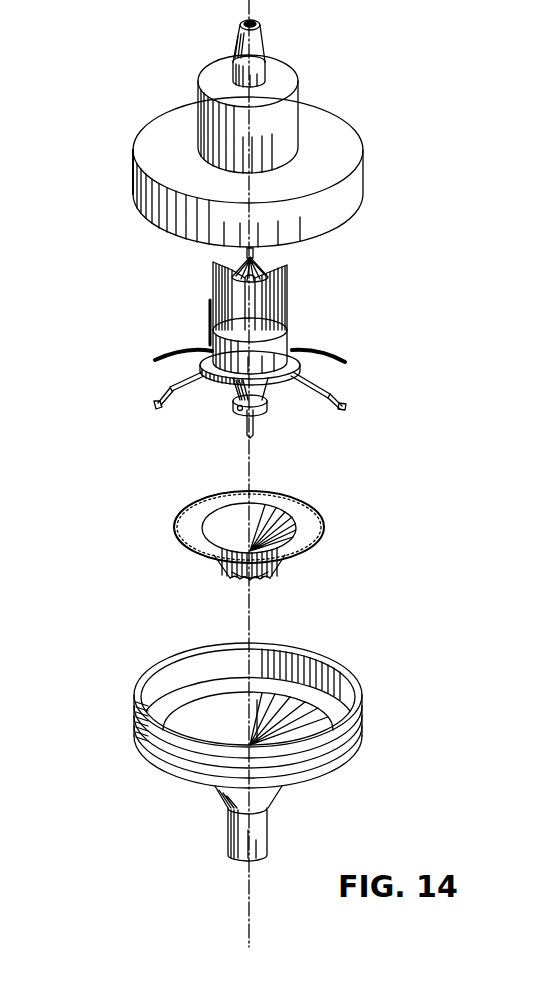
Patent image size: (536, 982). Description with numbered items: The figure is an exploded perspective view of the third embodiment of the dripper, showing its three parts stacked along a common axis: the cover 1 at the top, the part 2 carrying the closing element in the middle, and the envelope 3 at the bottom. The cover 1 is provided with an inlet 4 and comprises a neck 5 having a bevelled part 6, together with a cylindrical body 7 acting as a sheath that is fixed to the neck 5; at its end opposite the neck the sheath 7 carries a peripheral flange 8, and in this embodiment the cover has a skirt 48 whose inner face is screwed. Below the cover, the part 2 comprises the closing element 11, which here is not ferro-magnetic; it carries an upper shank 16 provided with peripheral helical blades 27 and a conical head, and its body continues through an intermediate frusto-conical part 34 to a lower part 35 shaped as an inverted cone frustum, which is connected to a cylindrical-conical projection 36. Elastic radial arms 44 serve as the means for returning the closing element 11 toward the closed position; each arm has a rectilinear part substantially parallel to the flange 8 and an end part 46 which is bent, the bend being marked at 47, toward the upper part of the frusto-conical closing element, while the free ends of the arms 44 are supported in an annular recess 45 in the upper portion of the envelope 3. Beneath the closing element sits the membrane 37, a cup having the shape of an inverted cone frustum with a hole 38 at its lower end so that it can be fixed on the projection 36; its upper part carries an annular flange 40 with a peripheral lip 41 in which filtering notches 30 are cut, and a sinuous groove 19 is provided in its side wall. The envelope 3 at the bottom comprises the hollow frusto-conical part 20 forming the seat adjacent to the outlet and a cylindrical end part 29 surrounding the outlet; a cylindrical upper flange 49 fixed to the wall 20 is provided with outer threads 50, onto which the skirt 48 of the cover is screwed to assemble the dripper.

The cover 1 is at (271, 123).
The part 2 is at (263, 350).
The envelope 3 is at (228, 745).
The inlet 4 is at (258, 22).
The neck 5 is at (262, 70).
The bevelled part 6 is at (268, 40).
The cylindrical body 7 is at (298, 105).
The peripheral flange 8 is at (345, 152).
The closing element 11 is at (216, 341).
The upper shank 16 is at (256, 310).
The sinuous groove 19 is at (270, 575).
The hollow frusto-conical part 20 is at (268, 797).
The peripheral helical blades 27 is at (284, 292).
The cylindrical end part 29 is at (268, 838).
The filtering notches 30 is at (238, 544).
The intermediate frusto-conical part 34 is at (290, 368).
The lower part 35 is at (265, 392).
The cylindrical-conical projection 36 is at (243, 408).
The membrane 37 is at (215, 548).
The hole 38 is at (286, 529).
The annular flange 40 is at (190, 522).
The peripheral lip 41 is at (185, 537).
The elastic radial arms 44 is at (196, 378).
The annular recess 45 is at (170, 705).
The end part 46 is at (158, 407).
The bend 47 is at (176, 392).
The skirt 48 is at (135, 191).
The cylindrical upper flange 49 is at (362, 731).
The outer threads 50 is at (322, 765).